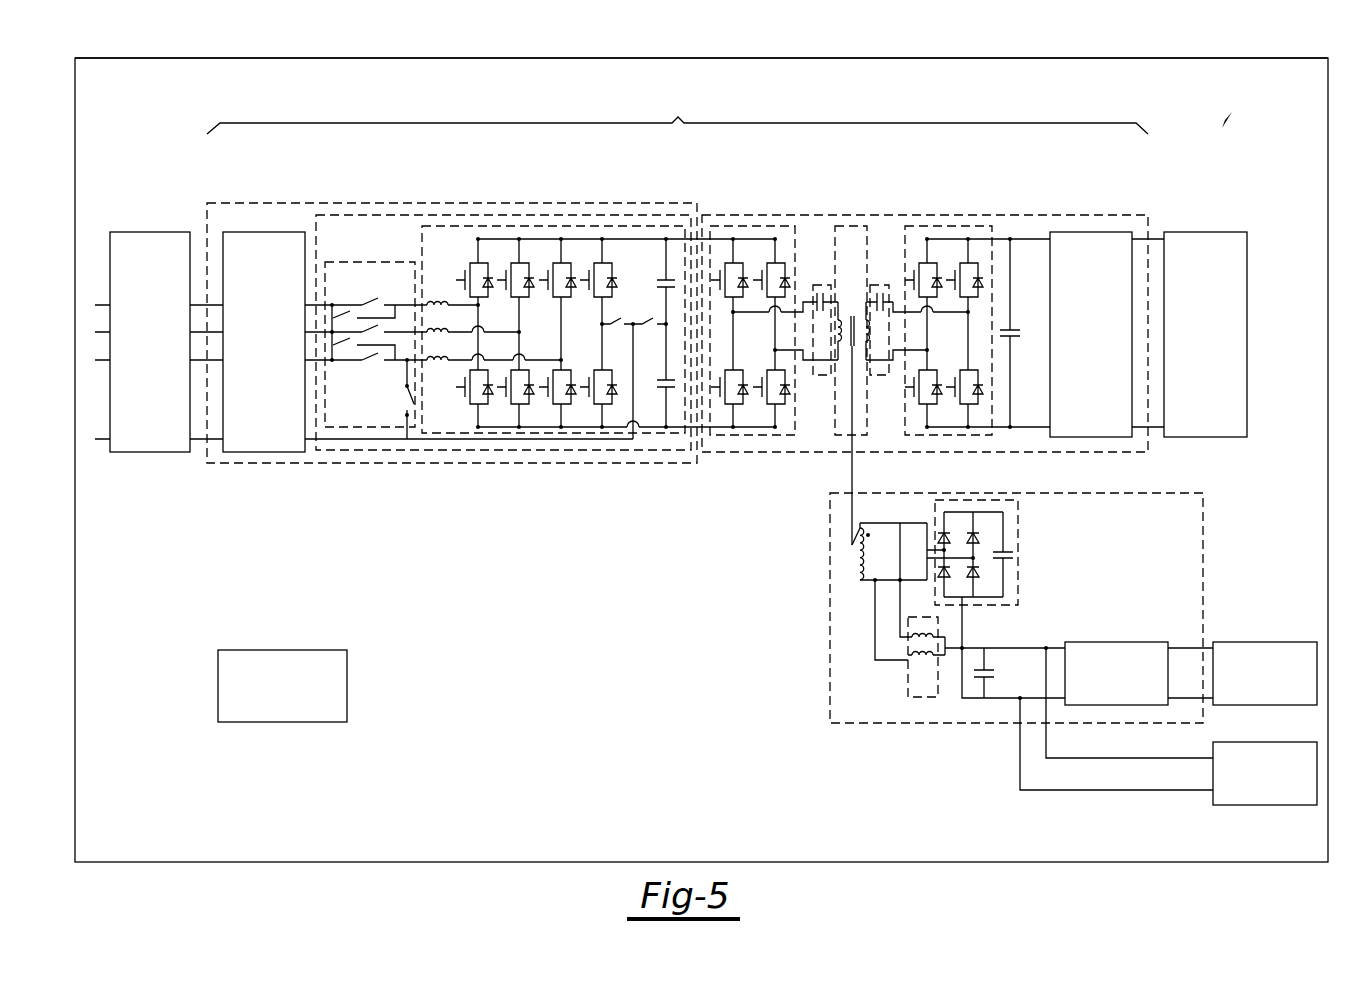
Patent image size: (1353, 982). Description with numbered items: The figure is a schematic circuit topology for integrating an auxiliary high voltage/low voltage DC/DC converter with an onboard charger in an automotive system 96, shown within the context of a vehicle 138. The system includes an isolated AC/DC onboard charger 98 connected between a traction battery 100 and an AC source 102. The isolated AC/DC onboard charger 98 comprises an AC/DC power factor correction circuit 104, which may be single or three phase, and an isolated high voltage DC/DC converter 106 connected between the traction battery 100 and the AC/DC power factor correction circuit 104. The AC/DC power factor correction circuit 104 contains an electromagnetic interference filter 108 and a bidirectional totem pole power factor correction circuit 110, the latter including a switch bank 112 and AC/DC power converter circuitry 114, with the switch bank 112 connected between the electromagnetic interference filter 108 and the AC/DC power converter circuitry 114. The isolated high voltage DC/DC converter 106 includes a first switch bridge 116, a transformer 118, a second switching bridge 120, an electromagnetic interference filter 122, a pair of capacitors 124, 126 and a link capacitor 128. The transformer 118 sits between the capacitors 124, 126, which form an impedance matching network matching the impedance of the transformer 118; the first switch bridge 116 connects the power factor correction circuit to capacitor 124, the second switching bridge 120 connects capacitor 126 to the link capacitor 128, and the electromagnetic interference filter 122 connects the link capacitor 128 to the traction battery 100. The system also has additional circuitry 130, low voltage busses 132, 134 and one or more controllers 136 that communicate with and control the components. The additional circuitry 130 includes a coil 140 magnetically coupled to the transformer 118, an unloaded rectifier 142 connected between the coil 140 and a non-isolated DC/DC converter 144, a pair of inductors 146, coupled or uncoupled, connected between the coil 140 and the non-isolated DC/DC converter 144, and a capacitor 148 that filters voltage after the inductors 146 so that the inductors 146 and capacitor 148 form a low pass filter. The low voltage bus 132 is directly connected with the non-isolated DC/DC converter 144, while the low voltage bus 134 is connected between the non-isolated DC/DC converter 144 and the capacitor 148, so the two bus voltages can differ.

The automotive system 96 is at (1255, 104).
The isolated AC/DC onboard charger 98 is at (677, 109).
The traction battery 100 is at (1205, 299).
The AC source 102 is at (142, 307).
The AC/DC power factor correction circuit 104 is at (452, 299).
The isolated high voltage DC/DC converter 106 is at (925, 296).
The electromagnetic interference filter 108 is at (247, 307).
The bidirectional totem pole power factor correction circuit 110 is at (503, 292).
The switch bank 112 is at (469, 302).
The AC/DC power converter circuitry 114 is at (598, 292).
The first switch bridge 116 is at (774, 291).
The transformer 118 is at (849, 346).
The second switching bridge 120 is at (958, 291).
The electromagnetic interference filter 122 is at (1107, 299).
The capacitor 124 is at (820, 299).
The capacitor 126 is at (884, 299).
The link capacitor 128 is at (1021, 333).
The additional circuitry 130 is at (1054, 608).
The low voltage bus 132 is at (1265, 640).
The low voltage bus 134 is at (1167, 748).
The controllers 136 is at (282, 652).
The vehicle 138 is at (701, 33).
The coil 140 is at (904, 591).
The unloaded rectifier 142 is at (1013, 551).
The non-isolated DC/DC converter 144 is at (1139, 640).
The inductors 146 is at (982, 702).
The capacitor 148 is at (1012, 650).